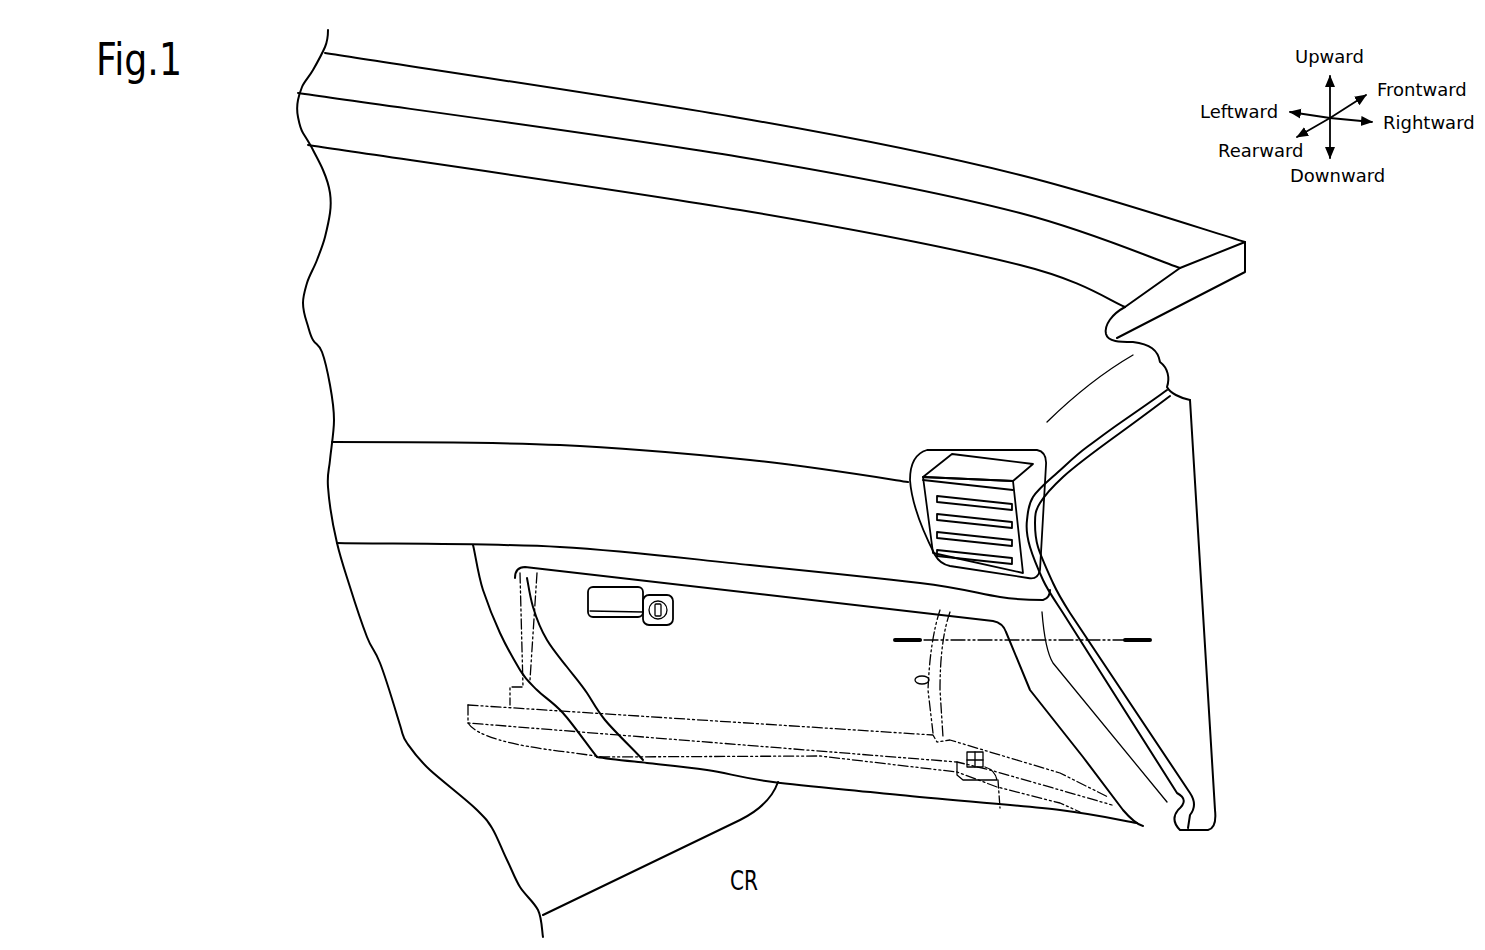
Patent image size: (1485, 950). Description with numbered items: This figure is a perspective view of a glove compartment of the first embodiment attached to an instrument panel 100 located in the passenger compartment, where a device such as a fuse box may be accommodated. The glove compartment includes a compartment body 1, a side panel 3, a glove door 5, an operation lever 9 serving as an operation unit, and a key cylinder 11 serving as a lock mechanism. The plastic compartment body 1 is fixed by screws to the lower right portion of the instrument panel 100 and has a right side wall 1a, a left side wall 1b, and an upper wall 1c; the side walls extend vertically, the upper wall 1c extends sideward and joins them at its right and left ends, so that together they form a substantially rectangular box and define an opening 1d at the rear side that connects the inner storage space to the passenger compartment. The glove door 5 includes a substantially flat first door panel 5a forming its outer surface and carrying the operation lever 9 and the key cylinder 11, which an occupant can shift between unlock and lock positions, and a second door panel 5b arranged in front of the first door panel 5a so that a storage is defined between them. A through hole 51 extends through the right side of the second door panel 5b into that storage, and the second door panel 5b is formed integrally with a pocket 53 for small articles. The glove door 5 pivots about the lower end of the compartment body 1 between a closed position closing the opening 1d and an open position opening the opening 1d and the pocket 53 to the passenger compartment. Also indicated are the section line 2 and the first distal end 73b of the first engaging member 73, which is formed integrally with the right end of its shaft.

The instrument panel 100 is at (910, 163).
The compartment body 1 is at (1148, 814).
The right side wall 1a is at (1120, 770).
The left side wall 1b is at (503, 617).
The upper wall 1c is at (568, 558).
The opening 1d is at (523, 580).
The section line 2 is at (908, 634).
The side panel 3 is at (1180, 473).
The glove door 5 is at (819, 618).
The first door panel 5a is at (745, 617).
The second door panel 5b is at (817, 737).
The operation lever 9 is at (613, 600).
The key cylinder 11 is at (659, 600).
The through hole 51 is at (983, 757).
The pocket 53 is at (929, 680).
The first engaging member 73 is at (1027, 836).
The first distal end 73b is at (1000, 808).